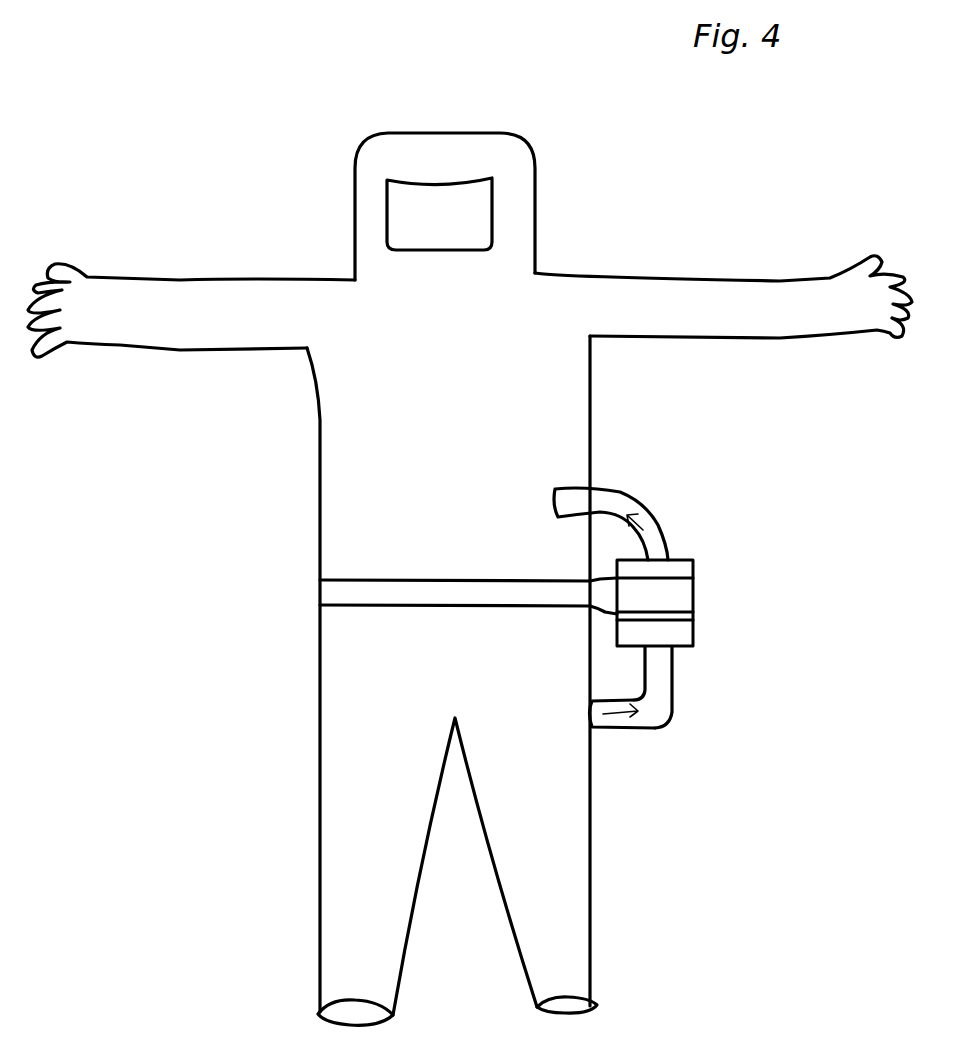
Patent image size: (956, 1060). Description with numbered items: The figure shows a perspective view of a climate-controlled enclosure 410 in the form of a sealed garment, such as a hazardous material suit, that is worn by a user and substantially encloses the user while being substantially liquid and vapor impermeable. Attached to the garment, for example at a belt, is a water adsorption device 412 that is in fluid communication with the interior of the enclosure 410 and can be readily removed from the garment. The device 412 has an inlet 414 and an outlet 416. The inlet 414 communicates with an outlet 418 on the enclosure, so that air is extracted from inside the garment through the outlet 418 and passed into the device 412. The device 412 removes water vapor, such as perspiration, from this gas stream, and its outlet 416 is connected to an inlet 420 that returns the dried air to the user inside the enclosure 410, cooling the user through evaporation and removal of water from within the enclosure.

The climate-controlled enclosure 410 is at (675, 242).
The water adsorption device 412 is at (670, 619).
The inlet 414 is at (683, 658).
The outlet 416 is at (673, 559).
The outlet 418 is at (586, 727).
The inlet 420 is at (553, 500).